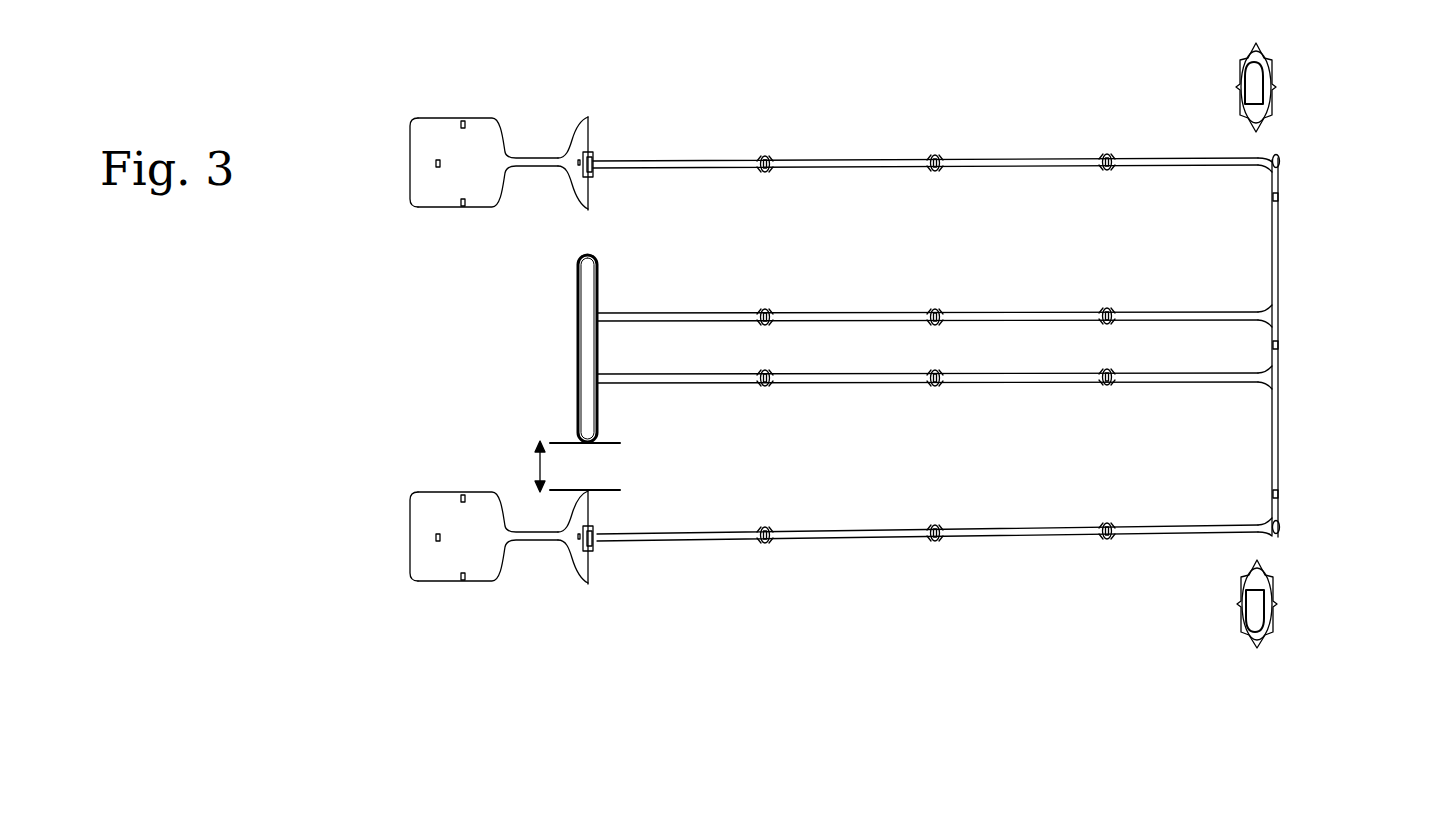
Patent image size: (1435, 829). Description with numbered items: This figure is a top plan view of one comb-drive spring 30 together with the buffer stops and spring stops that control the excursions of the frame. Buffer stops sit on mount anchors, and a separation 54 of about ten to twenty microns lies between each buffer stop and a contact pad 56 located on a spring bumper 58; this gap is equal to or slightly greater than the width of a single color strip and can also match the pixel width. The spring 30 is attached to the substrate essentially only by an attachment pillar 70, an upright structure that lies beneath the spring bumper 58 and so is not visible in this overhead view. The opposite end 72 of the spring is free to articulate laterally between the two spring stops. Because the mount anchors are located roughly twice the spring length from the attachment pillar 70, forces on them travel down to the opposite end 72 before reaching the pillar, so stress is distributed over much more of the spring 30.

The comb-drive spring 30 is at (1300, 403).
The separation 54 is at (577, 232).
The contact pad 56 is at (592, 260).
The spring bumper 58 is at (595, 287).
The attachment pillar 70 is at (620, 430).
The opposite end 72 is at (1277, 313).